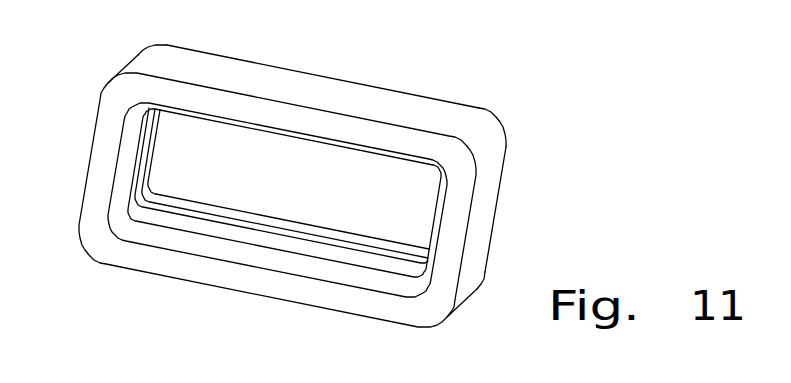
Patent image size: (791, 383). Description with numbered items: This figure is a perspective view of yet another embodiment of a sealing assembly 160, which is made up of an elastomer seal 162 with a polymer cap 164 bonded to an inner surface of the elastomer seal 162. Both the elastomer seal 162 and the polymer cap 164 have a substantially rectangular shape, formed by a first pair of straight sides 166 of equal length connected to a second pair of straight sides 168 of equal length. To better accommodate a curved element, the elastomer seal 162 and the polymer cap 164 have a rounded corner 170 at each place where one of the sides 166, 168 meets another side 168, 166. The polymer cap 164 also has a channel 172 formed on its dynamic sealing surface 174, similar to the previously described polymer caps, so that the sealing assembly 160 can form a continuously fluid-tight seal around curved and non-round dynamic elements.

The sealing assembly 160 is at (530, 163).
The elastomer seal 162 is at (424, 103).
The polymer cap 164 is at (343, 152).
The first pair of straight sides 166 is at (487, 223).
The second pair of straight sides 168 is at (312, 84).
The rounded corner 170 is at (109, 81).
The channel 172 is at (252, 228).
The dynamic sealing surface 174 is at (287, 247).